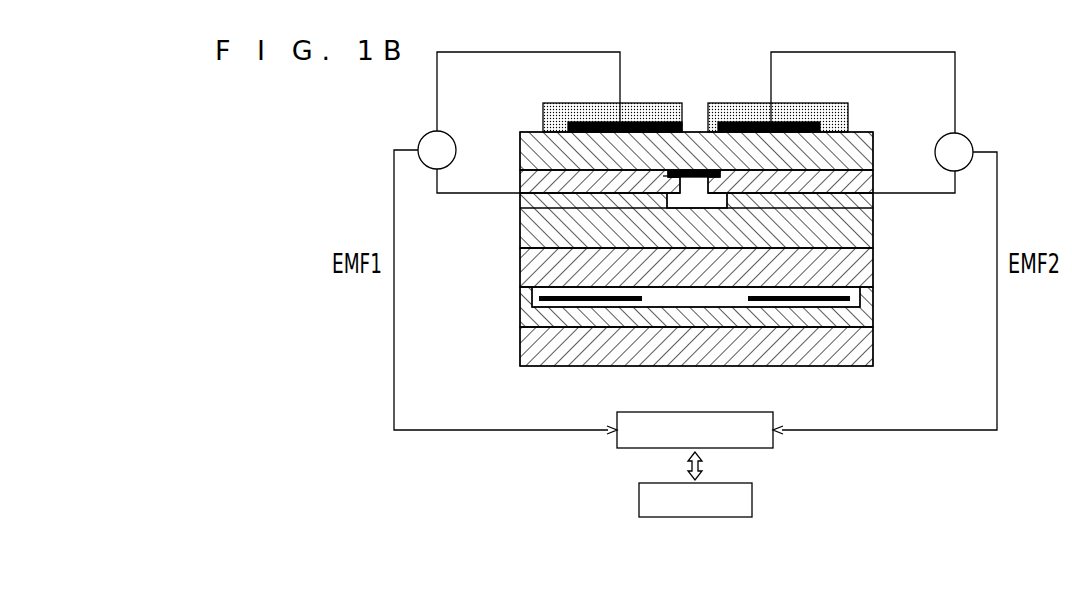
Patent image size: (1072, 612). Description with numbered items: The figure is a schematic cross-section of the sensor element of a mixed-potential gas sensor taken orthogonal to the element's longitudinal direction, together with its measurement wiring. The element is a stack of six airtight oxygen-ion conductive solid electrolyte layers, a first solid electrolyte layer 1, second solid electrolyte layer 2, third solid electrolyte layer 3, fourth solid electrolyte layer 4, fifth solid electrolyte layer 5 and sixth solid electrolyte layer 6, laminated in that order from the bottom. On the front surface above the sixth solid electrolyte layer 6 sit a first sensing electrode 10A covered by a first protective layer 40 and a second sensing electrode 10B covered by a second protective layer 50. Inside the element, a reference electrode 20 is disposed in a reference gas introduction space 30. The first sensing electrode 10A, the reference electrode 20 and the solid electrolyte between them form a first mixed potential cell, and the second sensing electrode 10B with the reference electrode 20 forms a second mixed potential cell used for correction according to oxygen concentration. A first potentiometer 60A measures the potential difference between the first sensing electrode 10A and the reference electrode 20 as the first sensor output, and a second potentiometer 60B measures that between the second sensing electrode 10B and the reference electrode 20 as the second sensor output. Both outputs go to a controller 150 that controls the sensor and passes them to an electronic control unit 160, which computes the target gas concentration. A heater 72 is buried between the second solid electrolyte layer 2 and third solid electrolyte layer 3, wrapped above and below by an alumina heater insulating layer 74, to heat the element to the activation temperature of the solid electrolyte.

The first solid electrolyte layer 1 is at (520, 350).
The second solid electrolyte layer 2 is at (520, 313).
The third solid electrolyte layer 3 is at (520, 269).
The fourth solid electrolyte layer 4 is at (520, 235).
The fifth solid electrolyte layer 5 is at (520, 183).
The sixth solid electrolyte layer 6 is at (520, 152).
The first sensing electrode 10A is at (640, 121).
The second sensing electrode 10B is at (799, 121).
The reference electrode 20 is at (694, 170).
The reference gas introduction space 30 is at (663, 176).
The first protective layer 40 is at (543, 117).
The second protective layer 50 is at (833, 110).
The first potentiometer 60A is at (423, 138).
The second potentiometer 60B is at (968, 139).
The heater 72 is at (549, 301).
The heater insulating layer 74 is at (645, 301).
The controller 150 is at (698, 412).
The electronic control unit (ECU) 160 is at (752, 500).